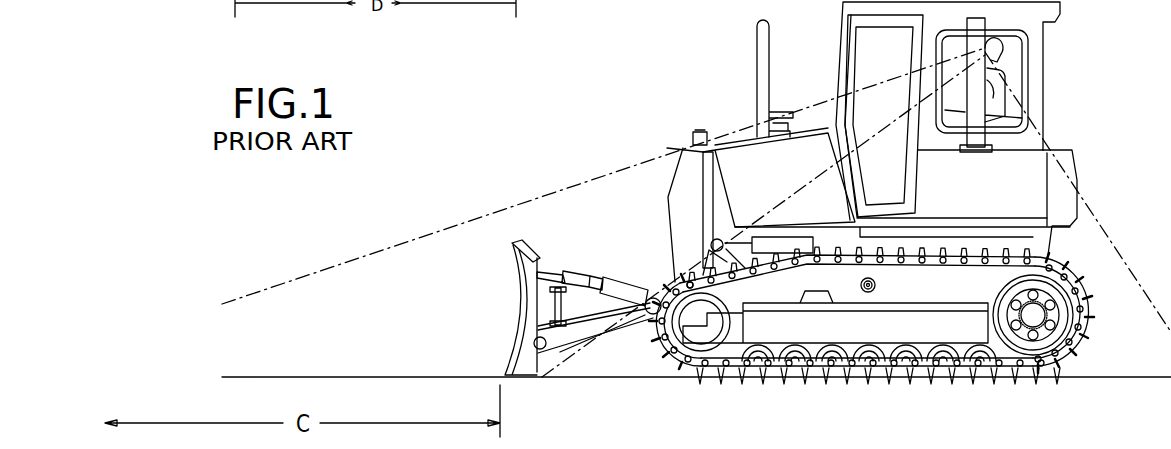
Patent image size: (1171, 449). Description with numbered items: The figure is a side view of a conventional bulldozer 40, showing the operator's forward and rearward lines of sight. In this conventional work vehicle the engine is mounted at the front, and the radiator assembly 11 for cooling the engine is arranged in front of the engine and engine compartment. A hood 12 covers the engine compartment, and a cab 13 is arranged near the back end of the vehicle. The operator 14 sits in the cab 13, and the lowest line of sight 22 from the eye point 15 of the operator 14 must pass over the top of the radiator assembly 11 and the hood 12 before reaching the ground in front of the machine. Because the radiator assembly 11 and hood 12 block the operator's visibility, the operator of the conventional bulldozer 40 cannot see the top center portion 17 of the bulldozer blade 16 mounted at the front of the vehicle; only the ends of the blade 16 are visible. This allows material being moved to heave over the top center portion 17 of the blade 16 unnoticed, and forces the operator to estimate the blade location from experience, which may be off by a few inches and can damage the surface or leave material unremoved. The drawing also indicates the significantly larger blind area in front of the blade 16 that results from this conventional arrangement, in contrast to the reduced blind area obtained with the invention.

The conventional bulldozer 40 is at (583, 113).
The lowest line of sight 22 is at (537, 197).
The radiator assembly 11 is at (681, 187).
The hood 12 is at (740, 157).
The cab 13 is at (1040, 70).
The operator 14 is at (993, 115).
The eye point 15 is at (993, 43).
The bulldozer blade 16 is at (518, 312).
The top center portion 17 is at (514, 252).